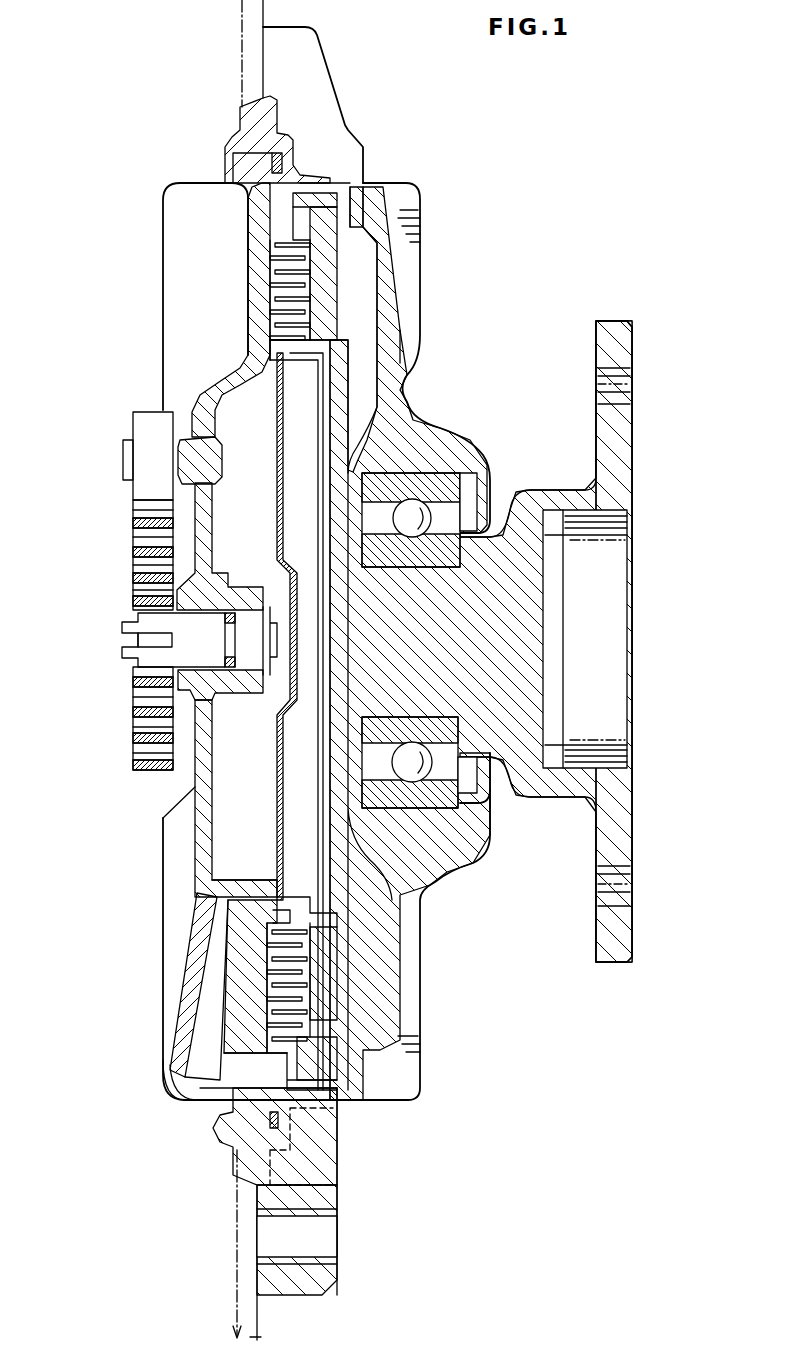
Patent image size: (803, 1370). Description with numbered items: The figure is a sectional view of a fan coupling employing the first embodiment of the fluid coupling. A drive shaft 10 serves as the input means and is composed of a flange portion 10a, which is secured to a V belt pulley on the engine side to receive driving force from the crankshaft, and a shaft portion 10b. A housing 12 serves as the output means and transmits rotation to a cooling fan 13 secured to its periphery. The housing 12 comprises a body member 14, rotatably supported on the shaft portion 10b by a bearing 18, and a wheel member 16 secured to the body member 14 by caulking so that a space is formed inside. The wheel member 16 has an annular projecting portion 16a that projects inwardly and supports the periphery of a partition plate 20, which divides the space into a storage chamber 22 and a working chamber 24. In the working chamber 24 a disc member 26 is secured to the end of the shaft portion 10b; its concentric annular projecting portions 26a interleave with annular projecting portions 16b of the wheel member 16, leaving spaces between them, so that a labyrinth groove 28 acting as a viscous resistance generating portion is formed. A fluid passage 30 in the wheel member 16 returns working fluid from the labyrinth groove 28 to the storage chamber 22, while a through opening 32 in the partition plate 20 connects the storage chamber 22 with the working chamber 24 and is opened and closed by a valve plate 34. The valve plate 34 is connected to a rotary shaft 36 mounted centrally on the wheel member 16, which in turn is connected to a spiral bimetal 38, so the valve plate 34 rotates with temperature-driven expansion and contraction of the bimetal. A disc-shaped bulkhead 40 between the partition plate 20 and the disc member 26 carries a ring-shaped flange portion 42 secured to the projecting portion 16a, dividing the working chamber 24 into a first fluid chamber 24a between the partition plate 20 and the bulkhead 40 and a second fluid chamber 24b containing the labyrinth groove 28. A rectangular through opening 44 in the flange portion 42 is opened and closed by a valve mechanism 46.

The drive shaft 10 is at (565, 797).
The flange portion 10a is at (633, 329).
The shaft portion 10b is at (457, 633).
The housing 12 is at (432, 214).
The cooling fan 13 is at (236, 1232).
The body member 14 is at (383, 280).
The wheel member 16 is at (250, 288).
The annular projecting portion 16a is at (275, 345).
The annular projecting portions 16b is at (350, 222).
The bearing 18 is at (482, 452).
The partition plate 20 is at (290, 500).
The storage chamber 22 is at (223, 567).
The working chamber 24 is at (288, 423).
The first fluid chamber 24a is at (290, 543).
The second fluid chamber 24b is at (352, 325).
The disc member 26 is at (349, 345).
The annular projecting portions 26a is at (268, 300).
The labyrinth groove 28 is at (285, 255).
The fluid passage 30 is at (190, 960).
The through opening 32 is at (268, 857).
The valve plate 34 is at (163, 818).
The rotary shaft 36 is at (150, 657).
The spiral bimetal 38 is at (150, 722).
The bulkhead 40 is at (400, 390).
The flange portion 42 is at (270, 327).
The through opening 44 is at (300, 945).
The valve mechanism 46 is at (313, 913).